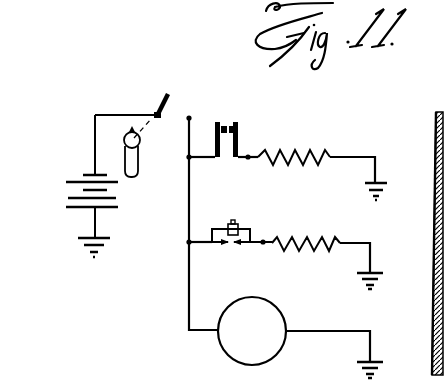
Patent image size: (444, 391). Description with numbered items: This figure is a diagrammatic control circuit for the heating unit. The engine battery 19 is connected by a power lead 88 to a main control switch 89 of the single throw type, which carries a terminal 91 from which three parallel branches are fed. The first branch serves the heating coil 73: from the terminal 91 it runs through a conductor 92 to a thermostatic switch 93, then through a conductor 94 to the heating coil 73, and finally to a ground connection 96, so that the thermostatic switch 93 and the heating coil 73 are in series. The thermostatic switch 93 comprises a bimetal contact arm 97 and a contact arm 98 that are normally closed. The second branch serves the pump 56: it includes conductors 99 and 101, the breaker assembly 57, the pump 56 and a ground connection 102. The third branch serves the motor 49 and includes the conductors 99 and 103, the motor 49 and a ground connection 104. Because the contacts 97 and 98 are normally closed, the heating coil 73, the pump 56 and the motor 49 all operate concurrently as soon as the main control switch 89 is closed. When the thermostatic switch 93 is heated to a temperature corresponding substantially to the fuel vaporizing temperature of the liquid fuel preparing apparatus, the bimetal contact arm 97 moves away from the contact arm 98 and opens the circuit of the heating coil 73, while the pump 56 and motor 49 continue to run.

The engine battery 19 is at (66, 182).
The motor 49 is at (275, 356).
The pump 56 is at (313, 238).
The breaker assembly 57 is at (252, 230).
The heating coil 73 is at (323, 153).
The power lead 88 is at (106, 113).
The main control switch 89 is at (168, 93).
The terminal 91 is at (189, 118).
The conductor 92 is at (207, 160).
The thermostatic switch 93 is at (238, 160).
The conductor 94 is at (318, 151).
The ground connection 96 is at (375, 168).
The bimetal contact arm 97 is at (227, 124).
The contact arm 98 is at (236, 138).
The conductor 99 is at (187, 190).
The conductor 101 is at (200, 250).
The ground connection 102 is at (371, 262).
The conductor 103 is at (188, 302).
The ground connection 104 is at (370, 350).